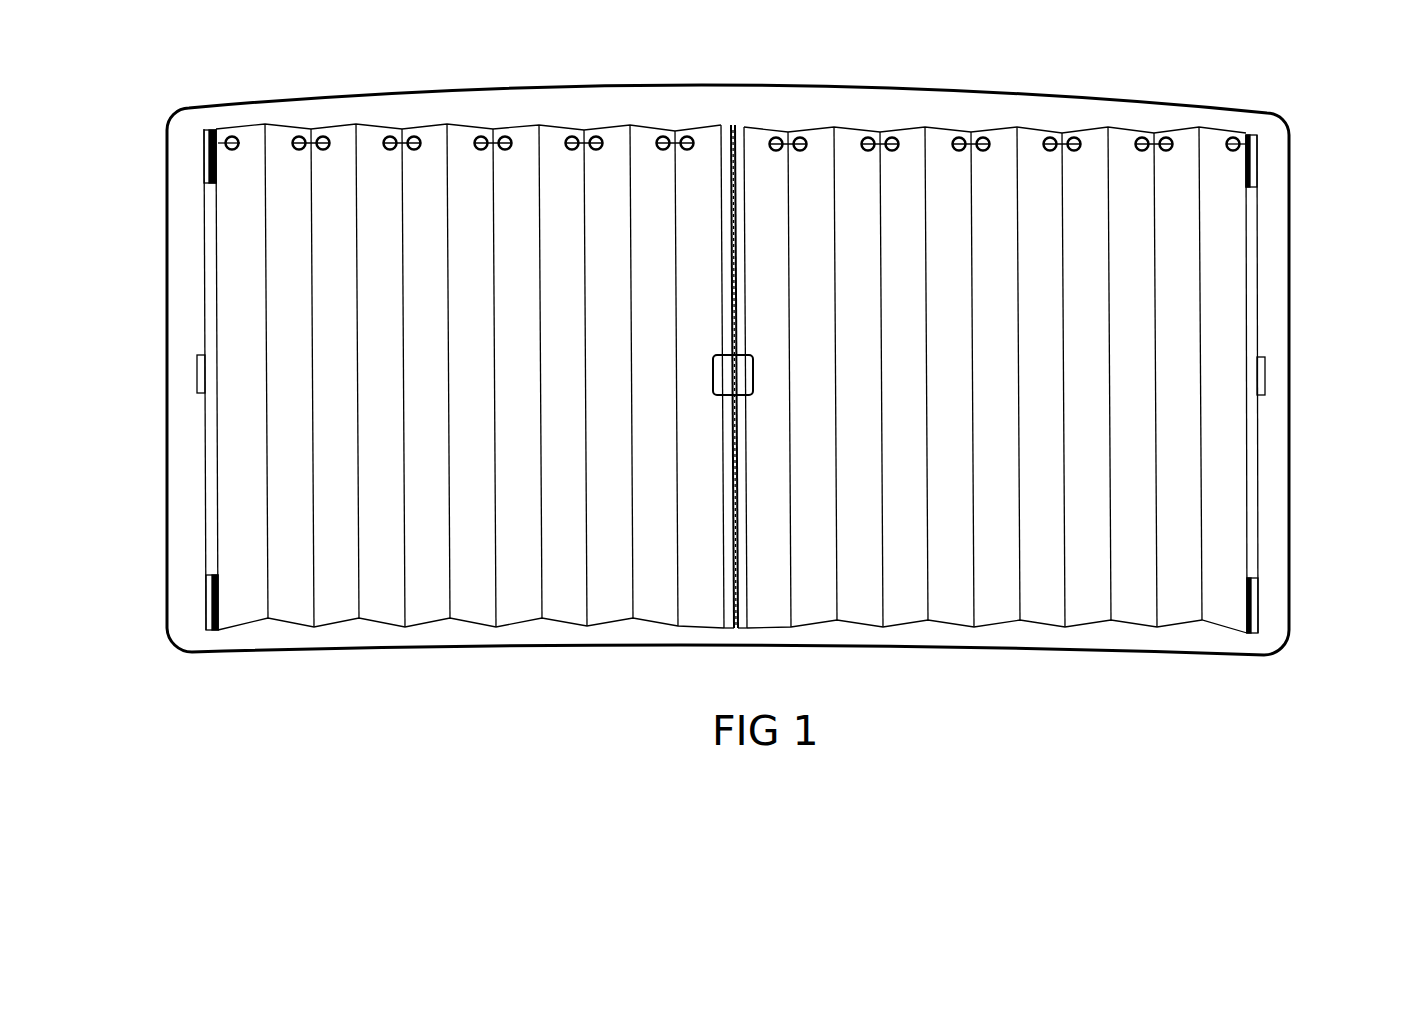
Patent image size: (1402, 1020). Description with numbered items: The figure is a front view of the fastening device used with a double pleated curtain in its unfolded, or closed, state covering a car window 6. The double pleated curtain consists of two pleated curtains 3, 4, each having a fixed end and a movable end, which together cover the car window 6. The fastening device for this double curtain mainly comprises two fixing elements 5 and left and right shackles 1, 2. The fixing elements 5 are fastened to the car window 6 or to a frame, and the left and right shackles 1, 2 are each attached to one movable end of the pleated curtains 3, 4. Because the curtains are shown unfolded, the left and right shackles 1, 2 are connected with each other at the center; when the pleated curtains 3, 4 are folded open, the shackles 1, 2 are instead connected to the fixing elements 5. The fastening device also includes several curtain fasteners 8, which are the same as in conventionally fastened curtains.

The left shackle 1 is at (712, 352).
The right shackle 2 is at (755, 352).
The pleated curtain 3 is at (586, 577).
The pleated curtain 4 is at (910, 590).
The fixing element 5 is at (197, 378).
The car window 6 is at (892, 107).
The curtain fastener 8 is at (205, 167).